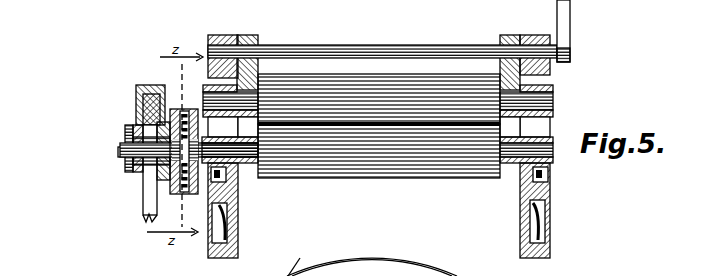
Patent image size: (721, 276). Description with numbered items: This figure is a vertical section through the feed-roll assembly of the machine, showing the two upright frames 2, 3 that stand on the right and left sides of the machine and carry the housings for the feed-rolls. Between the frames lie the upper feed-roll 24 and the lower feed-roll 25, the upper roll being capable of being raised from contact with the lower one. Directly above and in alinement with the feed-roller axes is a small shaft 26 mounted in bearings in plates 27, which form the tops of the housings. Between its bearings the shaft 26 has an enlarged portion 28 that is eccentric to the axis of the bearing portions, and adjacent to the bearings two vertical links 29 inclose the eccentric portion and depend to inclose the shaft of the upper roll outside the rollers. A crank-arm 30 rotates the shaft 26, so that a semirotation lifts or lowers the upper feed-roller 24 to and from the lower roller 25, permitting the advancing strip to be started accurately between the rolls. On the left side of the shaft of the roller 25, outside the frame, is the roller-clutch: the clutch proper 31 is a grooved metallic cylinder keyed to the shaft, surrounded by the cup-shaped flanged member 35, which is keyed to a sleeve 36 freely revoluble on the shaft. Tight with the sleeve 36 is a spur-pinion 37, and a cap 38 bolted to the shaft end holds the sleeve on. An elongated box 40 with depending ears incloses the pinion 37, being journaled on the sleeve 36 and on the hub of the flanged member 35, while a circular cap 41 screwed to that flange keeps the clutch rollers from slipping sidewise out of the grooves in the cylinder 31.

The upright frame 2 is at (550, 213).
The upright frame 3 is at (238, 219).
The upper feed-roll 24 is at (379, 92).
The lower feed-roll 25 is at (379, 159).
The small shaft 26 is at (208, 45).
The plates 27 is at (221, 35).
The enlarged portion 28 is at (401, 45).
The vertical links 29 is at (249, 35).
The crank-arm 30 is at (570, 17).
The clutch proper 31 is at (186, 195).
The cup-shaped flanged member of the clutch 35 is at (178, 195).
The sleeve 36 is at (125, 165).
The spur-pinion 37 is at (134, 126).
The cap 38 is at (126, 134).
The elongated box 40 is at (150, 85).
The circular cap 41 is at (184, 109).